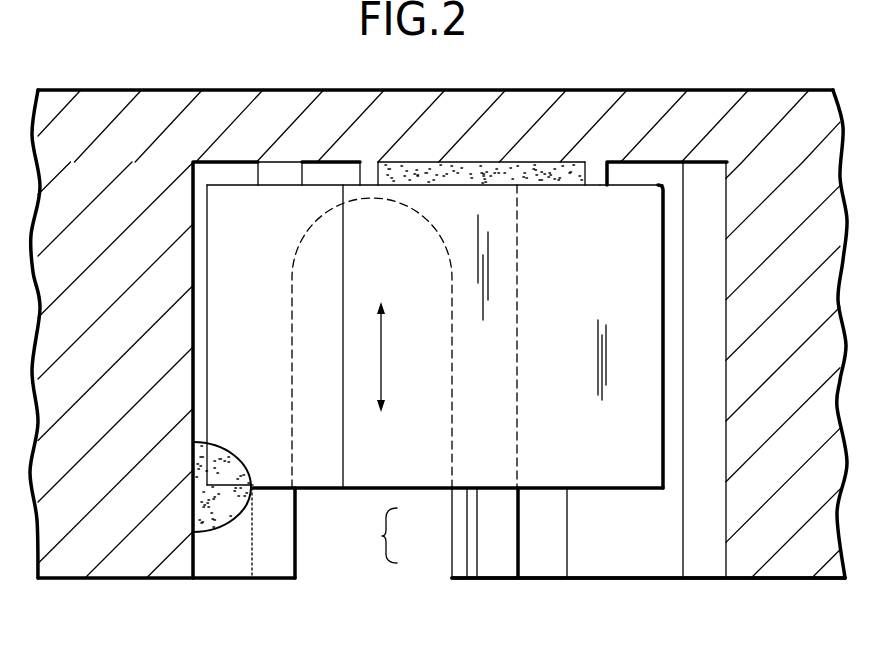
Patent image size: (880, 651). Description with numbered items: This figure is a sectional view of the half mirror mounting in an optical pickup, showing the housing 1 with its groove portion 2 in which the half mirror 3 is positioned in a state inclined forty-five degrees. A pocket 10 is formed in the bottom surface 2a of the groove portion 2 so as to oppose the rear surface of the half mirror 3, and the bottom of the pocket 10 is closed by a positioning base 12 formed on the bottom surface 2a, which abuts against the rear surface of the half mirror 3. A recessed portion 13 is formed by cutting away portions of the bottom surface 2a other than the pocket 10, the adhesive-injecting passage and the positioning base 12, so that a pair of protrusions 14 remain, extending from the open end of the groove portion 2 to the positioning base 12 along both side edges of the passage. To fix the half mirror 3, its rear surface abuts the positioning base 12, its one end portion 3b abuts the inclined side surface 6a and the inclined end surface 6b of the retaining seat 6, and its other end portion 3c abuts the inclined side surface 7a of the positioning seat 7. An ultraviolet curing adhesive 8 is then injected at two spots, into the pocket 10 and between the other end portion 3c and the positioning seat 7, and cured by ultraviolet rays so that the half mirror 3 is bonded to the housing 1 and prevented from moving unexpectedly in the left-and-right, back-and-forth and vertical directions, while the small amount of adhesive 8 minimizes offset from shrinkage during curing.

The housing 1 is at (223, 113).
The groove portion 2 is at (377, 508).
The bottom surface 2a is at (638, 170).
The half mirror 3 is at (602, 495).
The one end portion 3b is at (665, 463).
The other end portion 3c is at (205, 388).
The retaining seat 6 is at (379, 535).
The inclined side surface 6a is at (492, 515).
The inclined end surface 6b is at (575, 553).
The positioning seat 7 is at (302, 560).
The inclined side surface 7a is at (275, 507).
The ultraviolet curing adhesive 8 is at (550, 173).
The pocket 10 is at (467, 165).
The positioning base 12 is at (325, 173).
The recessed portion 13 is at (253, 163).
The protrusions 14 is at (365, 182).